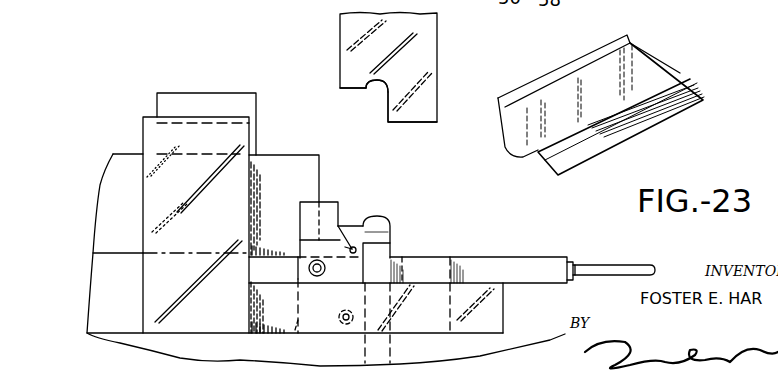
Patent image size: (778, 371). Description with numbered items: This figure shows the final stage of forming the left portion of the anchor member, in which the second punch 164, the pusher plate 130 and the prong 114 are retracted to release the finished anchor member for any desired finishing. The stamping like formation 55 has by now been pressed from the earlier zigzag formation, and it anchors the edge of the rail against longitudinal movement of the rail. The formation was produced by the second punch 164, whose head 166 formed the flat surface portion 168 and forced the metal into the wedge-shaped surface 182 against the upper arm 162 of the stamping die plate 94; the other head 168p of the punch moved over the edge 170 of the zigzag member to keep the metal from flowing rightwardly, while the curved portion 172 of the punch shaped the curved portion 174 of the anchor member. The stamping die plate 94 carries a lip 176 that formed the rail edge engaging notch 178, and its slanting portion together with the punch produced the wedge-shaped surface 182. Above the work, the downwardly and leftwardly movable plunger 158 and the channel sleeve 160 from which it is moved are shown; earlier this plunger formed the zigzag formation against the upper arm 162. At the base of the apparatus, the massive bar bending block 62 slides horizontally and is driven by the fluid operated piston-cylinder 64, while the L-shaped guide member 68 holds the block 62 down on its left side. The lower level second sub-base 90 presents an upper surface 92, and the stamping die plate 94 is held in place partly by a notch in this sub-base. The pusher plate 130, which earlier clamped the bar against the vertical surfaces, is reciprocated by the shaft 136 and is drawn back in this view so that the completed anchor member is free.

The stamping like formation 55 is at (373, 231).
The bar bending block 62 is at (298, 318).
The fluid operated piston-cylinder 64 is at (490, 300).
The L-shaped guide member 68 is at (203, 130).
The second sub-base 90 is at (503, 323).
The upper surface 92 is at (337, 282).
The stamping die plate 94 is at (318, 293).
The prong 114 is at (302, 170).
The pusher plate 130 is at (540, 267).
The shaft 136 is at (608, 270).
The plunger 158 is at (590, 80).
The channel sleeve 160 is at (655, 123).
The upper arm 162 is at (305, 210).
The second punch 164 is at (430, 62).
The piston head 166 is at (345, 90).
The flat surface portion 168 is at (352, 222).
The head 168p is at (432, 107).
The edge 170 is at (395, 248).
The curved portion 172 is at (375, 84).
The curved portion 174 is at (383, 218).
The lip 176 is at (305, 250).
The rail edge engaging notch 178 is at (372, 240).
The wedge-shaped surface 182 is at (345, 247).